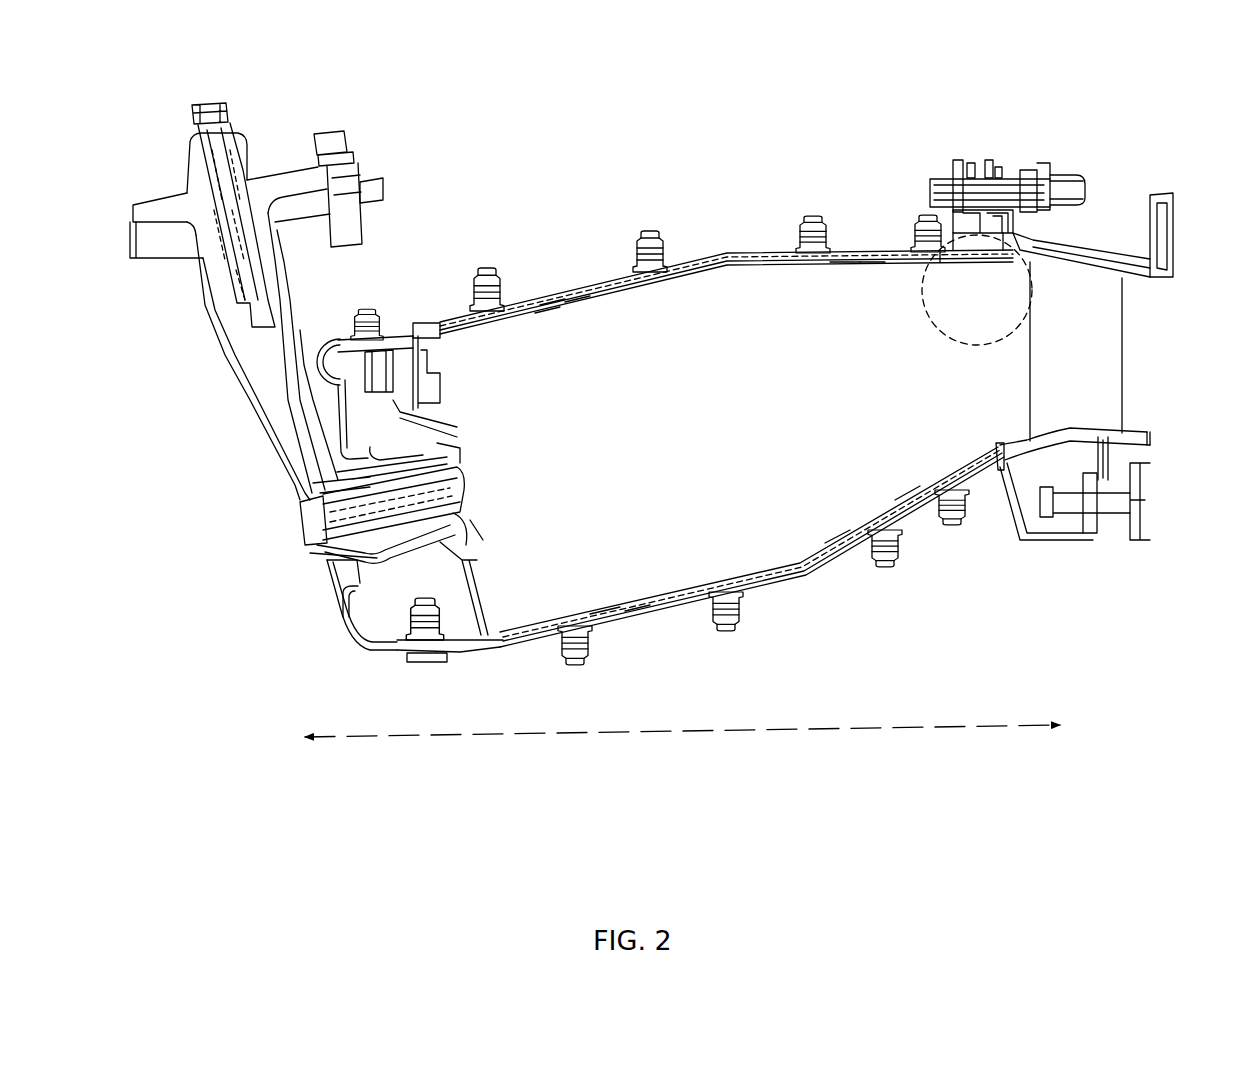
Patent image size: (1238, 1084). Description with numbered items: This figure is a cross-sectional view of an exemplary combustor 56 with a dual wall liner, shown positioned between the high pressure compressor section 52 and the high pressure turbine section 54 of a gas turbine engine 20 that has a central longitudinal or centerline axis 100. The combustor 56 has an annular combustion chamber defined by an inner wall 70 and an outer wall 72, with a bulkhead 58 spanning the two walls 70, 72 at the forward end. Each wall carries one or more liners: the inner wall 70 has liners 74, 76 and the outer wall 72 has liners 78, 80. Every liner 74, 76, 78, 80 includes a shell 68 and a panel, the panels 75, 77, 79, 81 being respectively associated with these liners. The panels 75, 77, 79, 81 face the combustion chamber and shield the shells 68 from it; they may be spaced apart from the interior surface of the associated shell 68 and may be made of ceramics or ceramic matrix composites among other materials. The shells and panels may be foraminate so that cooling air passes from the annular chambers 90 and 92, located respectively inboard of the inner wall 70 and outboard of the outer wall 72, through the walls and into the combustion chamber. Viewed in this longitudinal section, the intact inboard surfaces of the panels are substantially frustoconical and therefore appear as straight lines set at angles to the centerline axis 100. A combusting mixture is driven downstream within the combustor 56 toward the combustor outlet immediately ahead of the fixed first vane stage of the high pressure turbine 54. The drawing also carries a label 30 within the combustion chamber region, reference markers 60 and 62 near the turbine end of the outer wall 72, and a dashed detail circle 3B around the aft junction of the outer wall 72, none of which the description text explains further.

The gas turbine engine 20 is at (357, 100).
The combustor 56 is at (708, 212).
The high pressure compressor section 52 is at (197, 537).
The bulkhead 58 is at (453, 381).
The combustion chamber 30 is at (681, 442).
The annular chamber 92 is at (585, 252).
The annular chamber 90 is at (694, 671).
The shell 68 is at (547, 301).
The panel 79 is at (544, 306).
The liner 78 is at (573, 308).
The outer wall 72 is at (659, 292).
The liner 80 is at (840, 270).
The panel 81 is at (870, 265).
The detail section 3B is at (927, 325).
The outer case forward plane 60 is at (1015, 363).
The high pressure turbine section 54 is at (1012, 385).
The outer case aft plane 62 is at (1112, 369).
The panel 77 is at (906, 490).
The liner 76 is at (838, 531).
The inner wall 70 is at (670, 578).
The liner 74 is at (604, 598).
The panel 75 is at (636, 600).
The centerline axis 100 is at (882, 724).